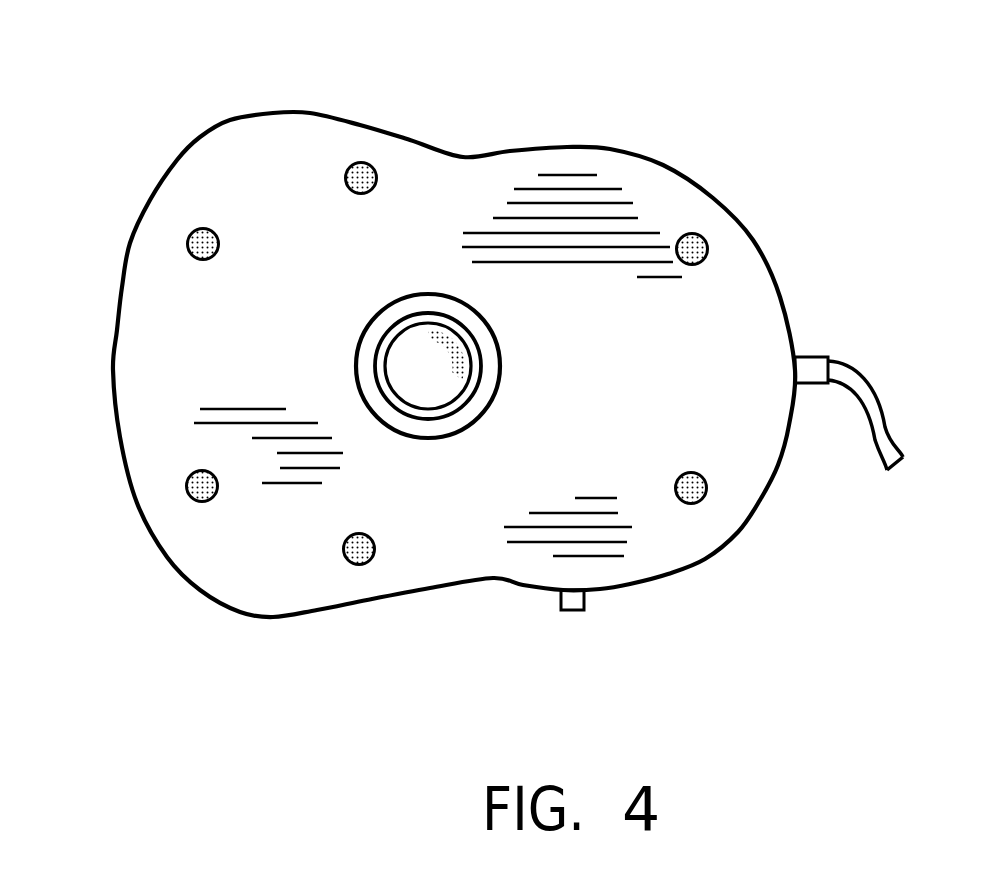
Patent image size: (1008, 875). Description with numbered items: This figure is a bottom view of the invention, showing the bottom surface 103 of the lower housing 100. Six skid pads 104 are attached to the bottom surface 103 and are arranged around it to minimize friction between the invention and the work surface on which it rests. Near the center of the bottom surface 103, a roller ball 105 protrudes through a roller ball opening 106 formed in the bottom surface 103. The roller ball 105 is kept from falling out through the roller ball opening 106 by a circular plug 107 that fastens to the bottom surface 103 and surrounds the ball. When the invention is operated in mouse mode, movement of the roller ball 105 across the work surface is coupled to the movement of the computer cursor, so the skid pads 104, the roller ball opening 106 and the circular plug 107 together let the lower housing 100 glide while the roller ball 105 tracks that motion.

The lower housing 100 is at (573, 149).
The bottom surface 103 is at (521, 212).
The skid pads 104 is at (352, 164).
The roller ball 105 is at (447, 386).
The roller ball opening 106 is at (480, 370).
The circular plug 107 is at (365, 370).